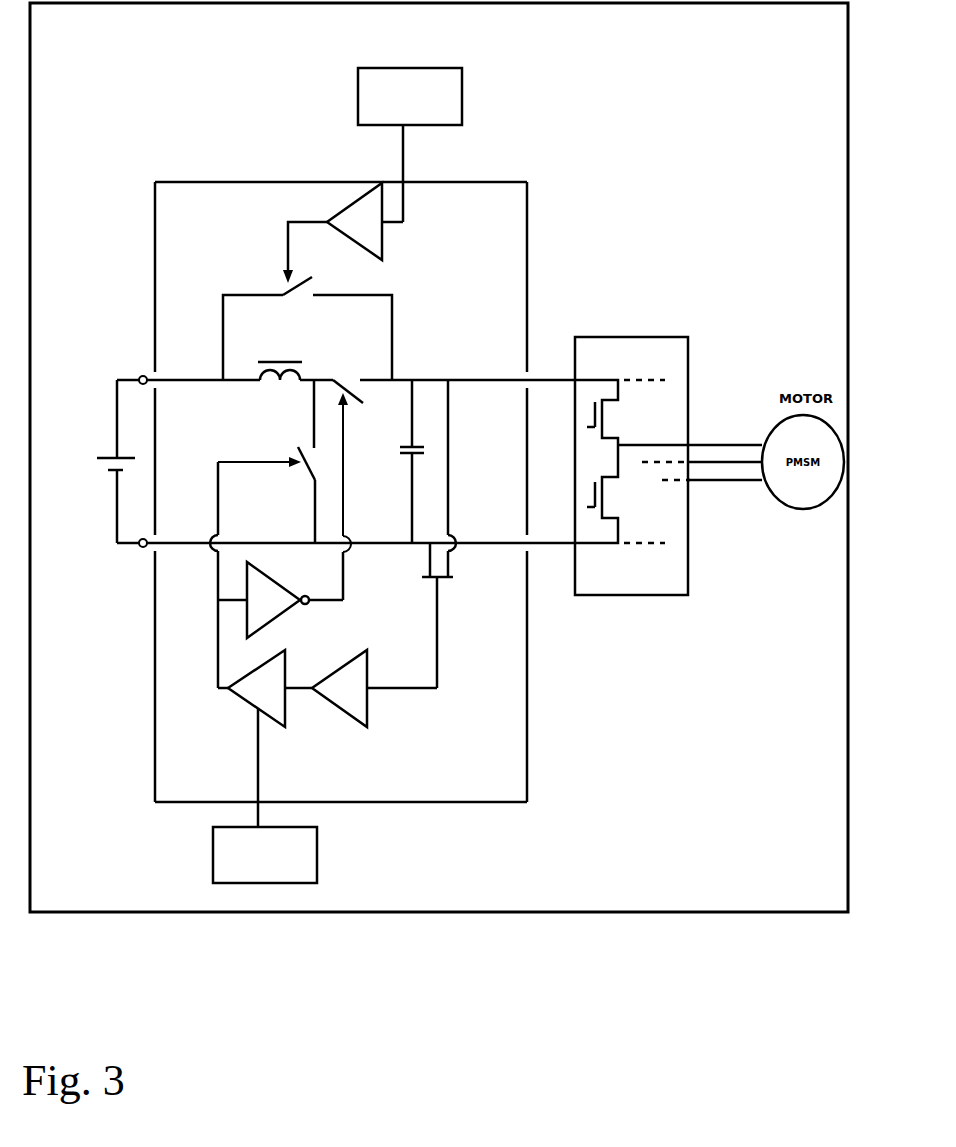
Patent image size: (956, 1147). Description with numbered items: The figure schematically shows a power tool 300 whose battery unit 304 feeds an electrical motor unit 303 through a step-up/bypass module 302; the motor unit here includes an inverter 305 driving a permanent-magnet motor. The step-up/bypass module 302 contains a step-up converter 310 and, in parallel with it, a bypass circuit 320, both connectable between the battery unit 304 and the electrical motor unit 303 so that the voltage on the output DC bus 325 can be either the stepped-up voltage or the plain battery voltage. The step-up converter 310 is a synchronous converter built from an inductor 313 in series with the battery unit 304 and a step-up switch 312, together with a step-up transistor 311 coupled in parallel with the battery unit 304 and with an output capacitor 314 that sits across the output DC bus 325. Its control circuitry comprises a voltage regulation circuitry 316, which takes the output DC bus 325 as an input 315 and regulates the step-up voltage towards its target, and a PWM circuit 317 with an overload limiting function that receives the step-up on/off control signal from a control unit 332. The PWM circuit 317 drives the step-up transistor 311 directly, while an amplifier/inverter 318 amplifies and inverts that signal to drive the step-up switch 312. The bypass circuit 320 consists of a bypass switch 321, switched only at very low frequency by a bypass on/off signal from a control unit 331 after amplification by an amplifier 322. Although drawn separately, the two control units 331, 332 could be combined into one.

The power tool 300 is at (752, 32).
The step-up/bypass module 302 is at (244, 91).
The electrical motor unit 303 is at (625, 394).
The battery unit 304 is at (86, 461).
The inverter 305 is at (632, 466).
The step-up converter 310 is at (243, 411).
The step-up transistor 311 is at (266, 461).
The step-up switch 312 is at (349, 451).
The inductor 313 is at (280, 358).
The output capacitor 314 is at (388, 461).
The input 315 is at (460, 611).
The voltage regulation circuitry 316 is at (361, 693).
The PWM circuit 317 is at (251, 738).
The amplifier/inverter 318 is at (280, 595).
The bypass circuit 320 is at (258, 249).
The bypass switch 321 is at (312, 273).
The amplifier 322 is at (343, 204).
The output DC bus 325 is at (476, 457).
The control unit 331 is at (410, 96).
The control unit 332 is at (265, 855).